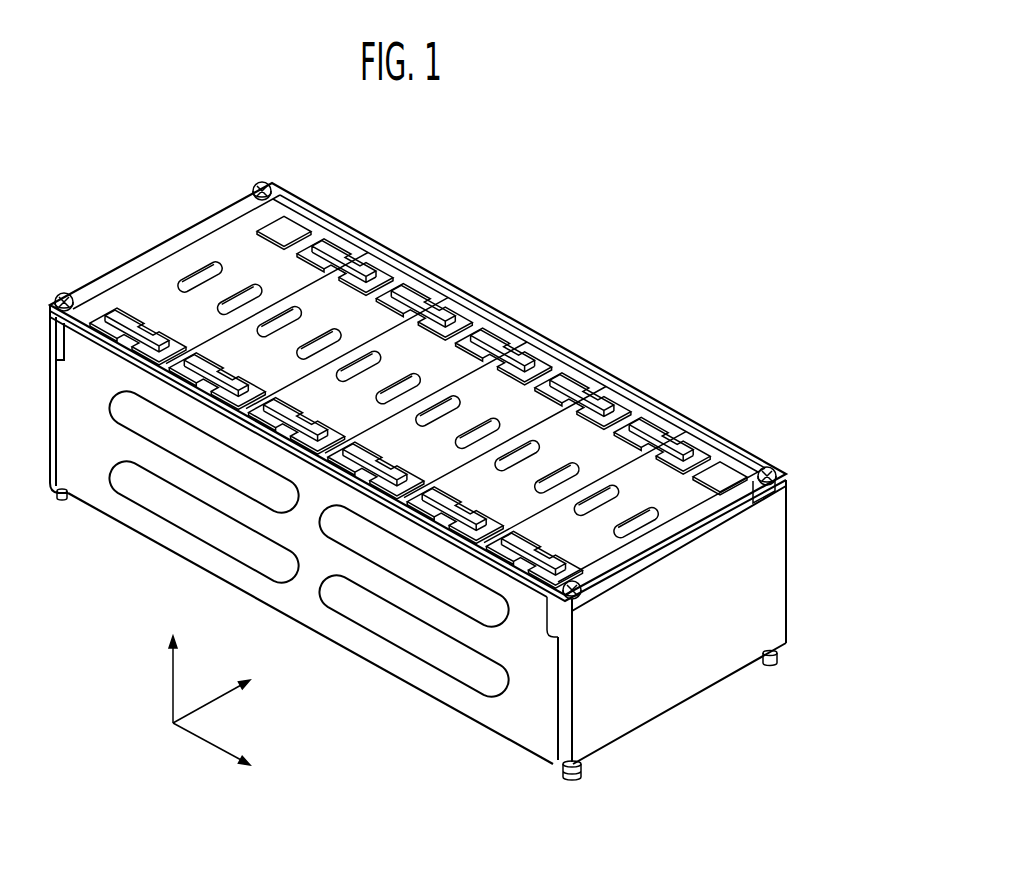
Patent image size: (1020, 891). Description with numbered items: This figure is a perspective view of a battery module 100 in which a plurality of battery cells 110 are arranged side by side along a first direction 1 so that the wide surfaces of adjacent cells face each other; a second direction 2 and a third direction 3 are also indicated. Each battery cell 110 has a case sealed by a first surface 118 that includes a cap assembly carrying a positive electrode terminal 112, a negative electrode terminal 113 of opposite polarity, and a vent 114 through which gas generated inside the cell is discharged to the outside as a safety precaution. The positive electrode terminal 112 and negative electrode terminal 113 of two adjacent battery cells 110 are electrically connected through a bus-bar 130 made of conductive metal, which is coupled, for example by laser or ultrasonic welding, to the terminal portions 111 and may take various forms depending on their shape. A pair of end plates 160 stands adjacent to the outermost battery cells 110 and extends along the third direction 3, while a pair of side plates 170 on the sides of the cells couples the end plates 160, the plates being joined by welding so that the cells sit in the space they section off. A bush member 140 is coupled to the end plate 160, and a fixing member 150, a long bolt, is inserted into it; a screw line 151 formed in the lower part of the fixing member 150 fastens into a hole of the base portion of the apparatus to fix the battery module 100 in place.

The battery module 100 is at (614, 201).
The battery cell 110 is at (518, 400).
The terminal portion 111 is at (720, 381).
The positive electrode terminal 112 is at (726, 462).
The negative electrode terminal 113 is at (683, 448).
The vent 114 is at (637, 527).
The first surface 118 is at (598, 552).
The bus-bar 130 is at (640, 430).
The bush member 140 is at (772, 497).
The fixing member 150 is at (776, 468).
The screw line 151 is at (572, 787).
The end plate 160 is at (160, 250).
The side plate 170 is at (513, 328).
The first direction 1 is at (220, 752).
The second direction 2 is at (173, 665).
The third direction 3 is at (220, 693).